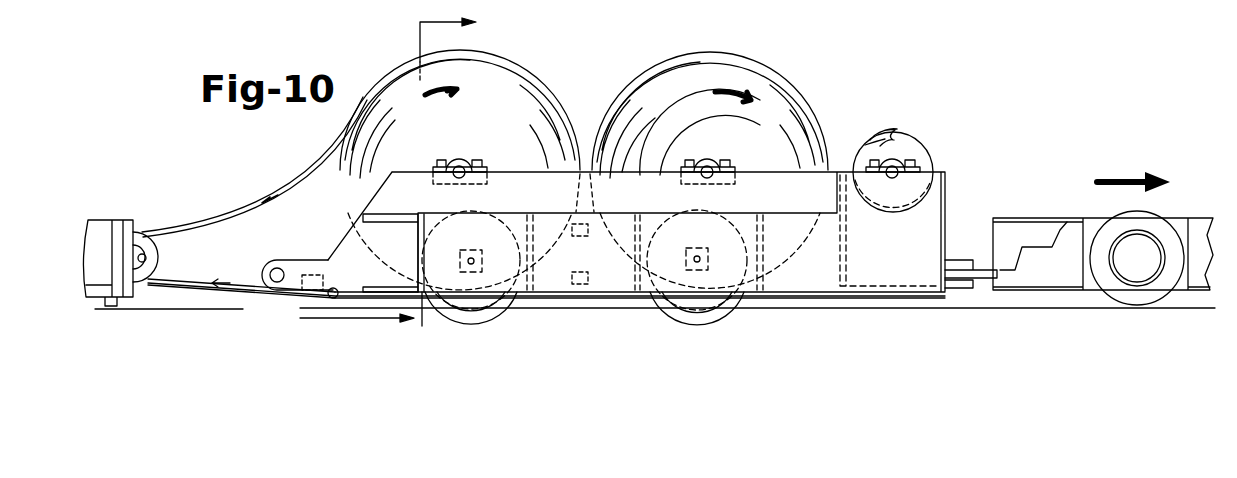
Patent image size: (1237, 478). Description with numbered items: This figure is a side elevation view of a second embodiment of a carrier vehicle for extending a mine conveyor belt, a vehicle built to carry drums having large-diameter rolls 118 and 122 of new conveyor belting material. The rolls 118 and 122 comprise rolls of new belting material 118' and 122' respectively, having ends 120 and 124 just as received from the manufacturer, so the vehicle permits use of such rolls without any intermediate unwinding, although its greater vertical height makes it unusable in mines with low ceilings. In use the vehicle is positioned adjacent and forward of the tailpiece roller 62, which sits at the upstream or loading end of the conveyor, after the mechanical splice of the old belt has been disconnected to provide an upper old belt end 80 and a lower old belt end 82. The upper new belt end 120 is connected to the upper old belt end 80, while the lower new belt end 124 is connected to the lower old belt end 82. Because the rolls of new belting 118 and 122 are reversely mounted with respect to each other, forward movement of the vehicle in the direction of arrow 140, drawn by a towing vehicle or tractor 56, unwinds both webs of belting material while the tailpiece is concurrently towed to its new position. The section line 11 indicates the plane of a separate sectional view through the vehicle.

The roll of new conveyor belting material 118 is at (460, 169).
The roll of new conveyor belting material 122 is at (723, 170).
The new belting material 118' is at (255, 168).
The new belting material 122' is at (546, 276).
The upper new belt end 120 is at (221, 217).
The upper old belt end 80 is at (178, 226).
The tailpiece roller 62 is at (160, 252).
The lower old belt end 82 is at (166, 283).
The lower new belt end 124 is at (250, 292).
The towing vehicle or tractor 56 is at (1068, 220).
The arrow 140 is at (1130, 180).
The section line 11 is at (391, 168).